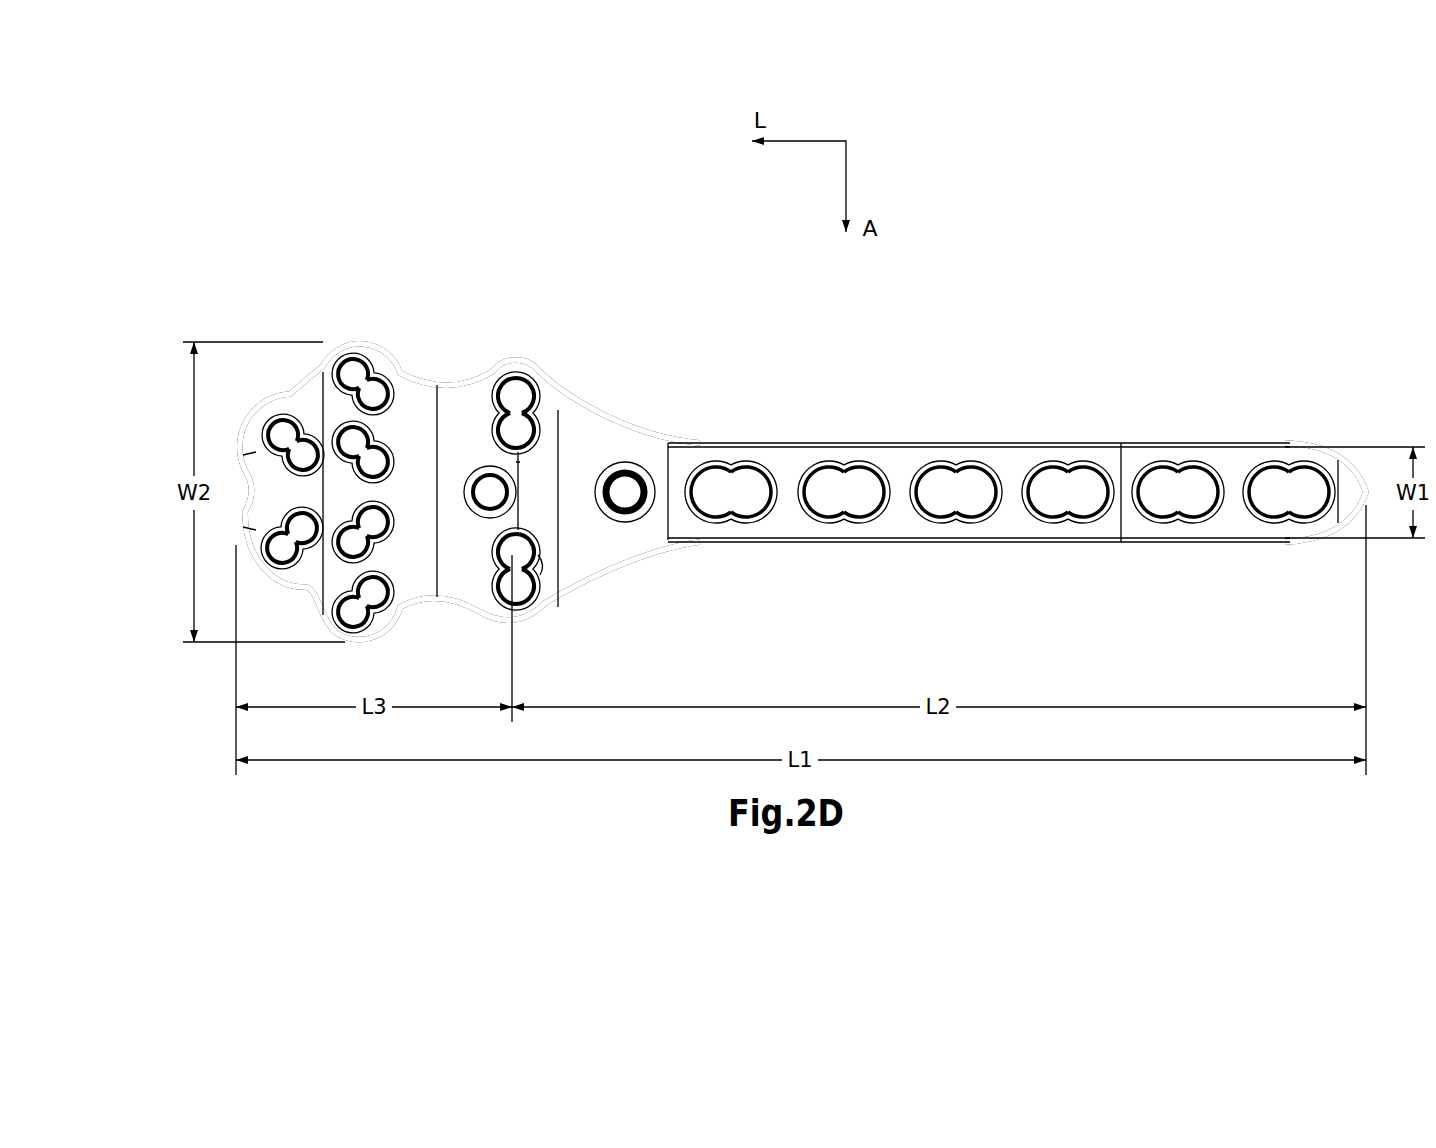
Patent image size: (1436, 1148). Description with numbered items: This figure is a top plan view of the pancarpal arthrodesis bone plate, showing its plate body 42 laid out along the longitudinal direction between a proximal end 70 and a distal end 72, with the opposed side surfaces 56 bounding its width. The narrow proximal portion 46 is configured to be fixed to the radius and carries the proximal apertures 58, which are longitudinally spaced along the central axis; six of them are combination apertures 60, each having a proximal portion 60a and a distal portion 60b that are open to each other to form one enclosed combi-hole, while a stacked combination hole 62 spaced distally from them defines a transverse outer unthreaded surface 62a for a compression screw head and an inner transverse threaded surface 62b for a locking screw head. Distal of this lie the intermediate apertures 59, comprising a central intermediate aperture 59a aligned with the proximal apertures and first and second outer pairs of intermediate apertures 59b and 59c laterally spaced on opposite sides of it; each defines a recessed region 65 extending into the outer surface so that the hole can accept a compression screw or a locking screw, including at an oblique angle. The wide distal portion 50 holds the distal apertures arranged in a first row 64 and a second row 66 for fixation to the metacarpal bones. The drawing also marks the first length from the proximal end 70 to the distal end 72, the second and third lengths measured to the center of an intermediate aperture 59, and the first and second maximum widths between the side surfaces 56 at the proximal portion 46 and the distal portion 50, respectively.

The plate body 42 is at (1100, 440).
The proximal portion 46 is at (948, 445).
The distal portion 50 is at (305, 392).
The side surfaces 56 is at (1012, 445).
The proximal apertures 58 is at (1083, 524).
The intermediate apertures 59 is at (558, 482).
The central intermediate aperture 59a is at (521, 490).
The first outer pair of intermediate apertures 59b is at (533, 612).
The second outer pair of intermediate apertures 59c is at (524, 380).
The combination aperture 60 is at (1276, 492).
The proximal portion of combination aperture 60a is at (1317, 445).
The distal portion of combination aperture 60b is at (1248, 445).
The stacked combination hole 62 is at (682, 436).
The transverse outer unthreaded surface 62a is at (608, 464).
The inner transverse threaded surface 62b is at (646, 487).
The first row 64 is at (372, 366).
The recessed region 65 is at (475, 467).
The second row 66 is at (280, 416).
The proximal end 70 is at (1368, 497).
The distal end 72 is at (235, 546).